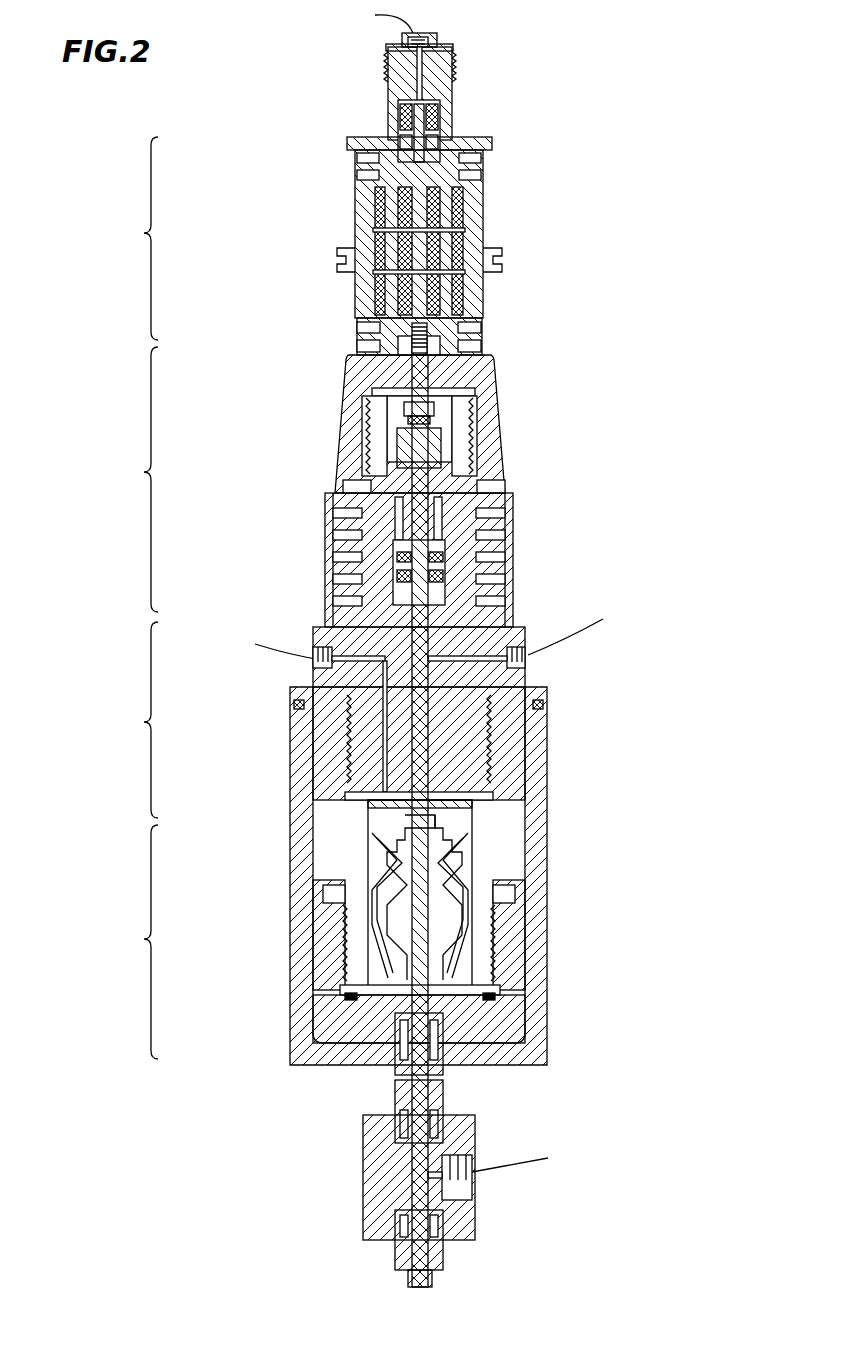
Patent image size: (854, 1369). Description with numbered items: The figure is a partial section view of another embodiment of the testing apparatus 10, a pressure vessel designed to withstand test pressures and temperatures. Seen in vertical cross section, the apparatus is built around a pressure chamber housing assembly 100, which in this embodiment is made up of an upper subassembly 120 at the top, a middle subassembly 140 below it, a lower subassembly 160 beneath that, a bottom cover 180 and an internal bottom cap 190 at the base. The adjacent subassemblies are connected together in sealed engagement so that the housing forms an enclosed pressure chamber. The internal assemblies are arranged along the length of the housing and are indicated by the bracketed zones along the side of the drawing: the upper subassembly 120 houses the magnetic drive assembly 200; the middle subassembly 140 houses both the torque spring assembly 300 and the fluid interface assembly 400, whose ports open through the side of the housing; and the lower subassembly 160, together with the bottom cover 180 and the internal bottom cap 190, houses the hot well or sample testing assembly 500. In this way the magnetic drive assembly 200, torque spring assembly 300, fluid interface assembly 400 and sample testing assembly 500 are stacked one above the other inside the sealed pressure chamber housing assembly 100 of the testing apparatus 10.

The testing apparatus 10 is at (609, 97).
The pressure chamber housing assembly 100 is at (520, 217).
The upper subassembly 120 is at (485, 372).
The middle subassembly 140 is at (503, 510).
The lower subassembly 160 is at (521, 693).
The bottom cover 180 is at (549, 787).
The internal bottom cap 190 is at (512, 1024).
The magnetic drive assembly 200 is at (144, 233).
The torque spring assembly 300 is at (144, 472).
The fluid interface assembly 400 is at (144, 722).
The hot well or sample testing assembly 500 is at (144, 939).